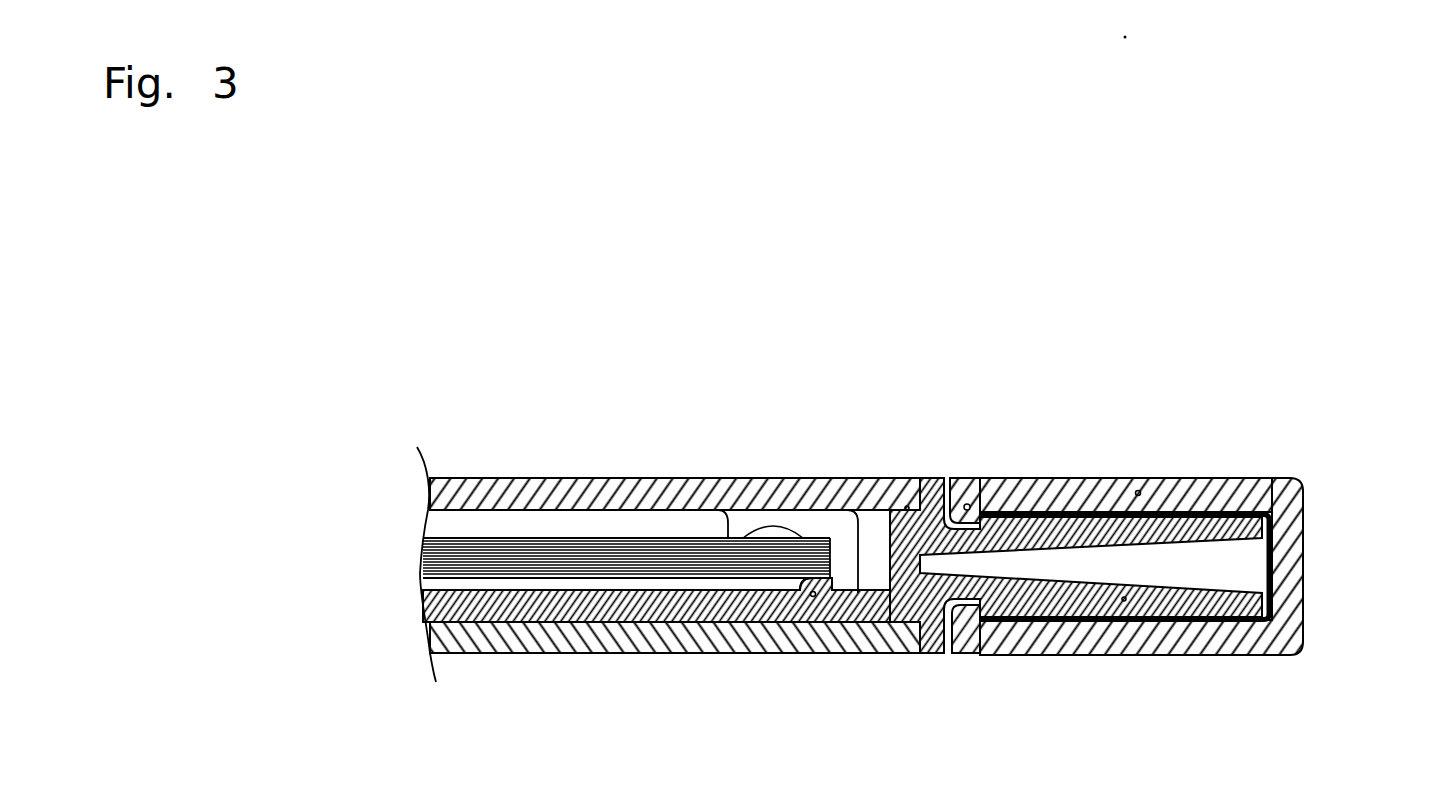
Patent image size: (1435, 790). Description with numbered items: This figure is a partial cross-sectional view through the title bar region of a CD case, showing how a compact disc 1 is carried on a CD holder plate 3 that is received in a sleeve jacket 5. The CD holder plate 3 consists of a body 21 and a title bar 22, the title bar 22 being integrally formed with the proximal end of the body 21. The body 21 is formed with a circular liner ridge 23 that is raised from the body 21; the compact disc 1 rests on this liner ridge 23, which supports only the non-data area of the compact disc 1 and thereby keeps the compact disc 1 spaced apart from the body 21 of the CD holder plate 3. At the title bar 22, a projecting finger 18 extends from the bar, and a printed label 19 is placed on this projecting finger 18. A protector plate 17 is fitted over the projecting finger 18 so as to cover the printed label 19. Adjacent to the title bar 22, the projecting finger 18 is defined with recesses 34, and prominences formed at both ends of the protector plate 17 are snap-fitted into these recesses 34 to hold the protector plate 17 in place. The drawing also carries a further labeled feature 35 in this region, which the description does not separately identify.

The compact disc 1 is at (620, 550).
The CD holder plate 3 is at (931, 640).
The sleeve jacket 5 is at (512, 478).
The protector plate 17 is at (1228, 655).
The projecting finger 18 is at (1271, 522).
The printed label 19 is at (1162, 505).
The body 21 is at (559, 613).
The title bar 22 is at (939, 495).
The circular liner ridge 23 is at (802, 588).
The recesses 34 is at (977, 612).
The upper lip of sleeve 35 is at (968, 505).